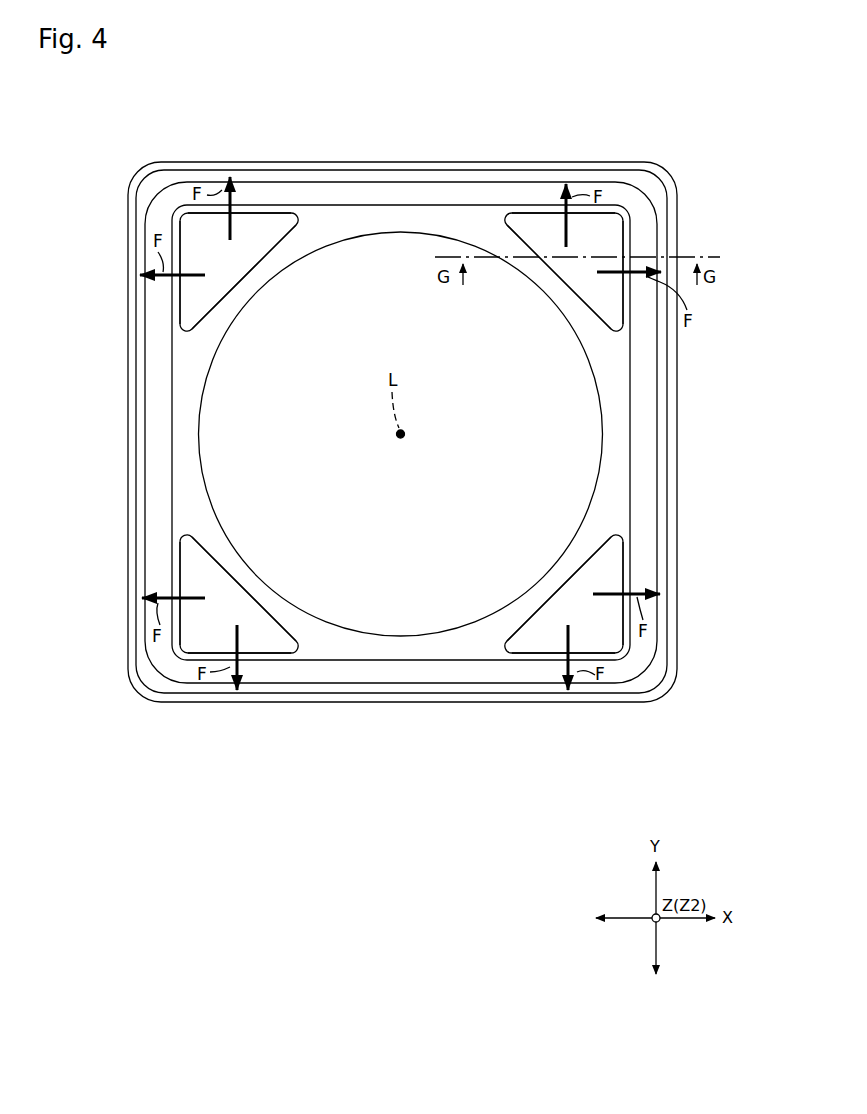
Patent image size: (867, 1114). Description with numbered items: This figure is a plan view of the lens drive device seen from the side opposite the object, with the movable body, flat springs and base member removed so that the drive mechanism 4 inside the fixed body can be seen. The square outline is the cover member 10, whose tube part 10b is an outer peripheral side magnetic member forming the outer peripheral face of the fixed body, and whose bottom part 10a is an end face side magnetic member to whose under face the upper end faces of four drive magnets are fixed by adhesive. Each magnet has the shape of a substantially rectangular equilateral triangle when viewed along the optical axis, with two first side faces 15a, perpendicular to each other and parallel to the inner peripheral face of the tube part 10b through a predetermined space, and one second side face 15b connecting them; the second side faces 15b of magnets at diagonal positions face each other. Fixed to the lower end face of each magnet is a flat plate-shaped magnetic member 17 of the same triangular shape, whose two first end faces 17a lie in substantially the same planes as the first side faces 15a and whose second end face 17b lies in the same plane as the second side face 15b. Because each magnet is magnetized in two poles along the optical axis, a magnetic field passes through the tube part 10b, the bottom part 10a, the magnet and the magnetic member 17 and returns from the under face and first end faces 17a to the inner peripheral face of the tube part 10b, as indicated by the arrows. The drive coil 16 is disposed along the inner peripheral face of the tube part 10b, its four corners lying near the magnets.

The drive mechanism 4 is at (649, 190).
The cover member 10 is at (402, 399).
The bottom part 10a is at (362, 232).
The tube part 10b is at (408, 162).
The first side face 15a is at (401, 435).
The second side face 15b is at (401, 433).
The drive coil 16 is at (343, 183).
The magnetic member 17 is at (213, 244).
The first end face 17a is at (280, 213).
The second end face 17b is at (276, 272).